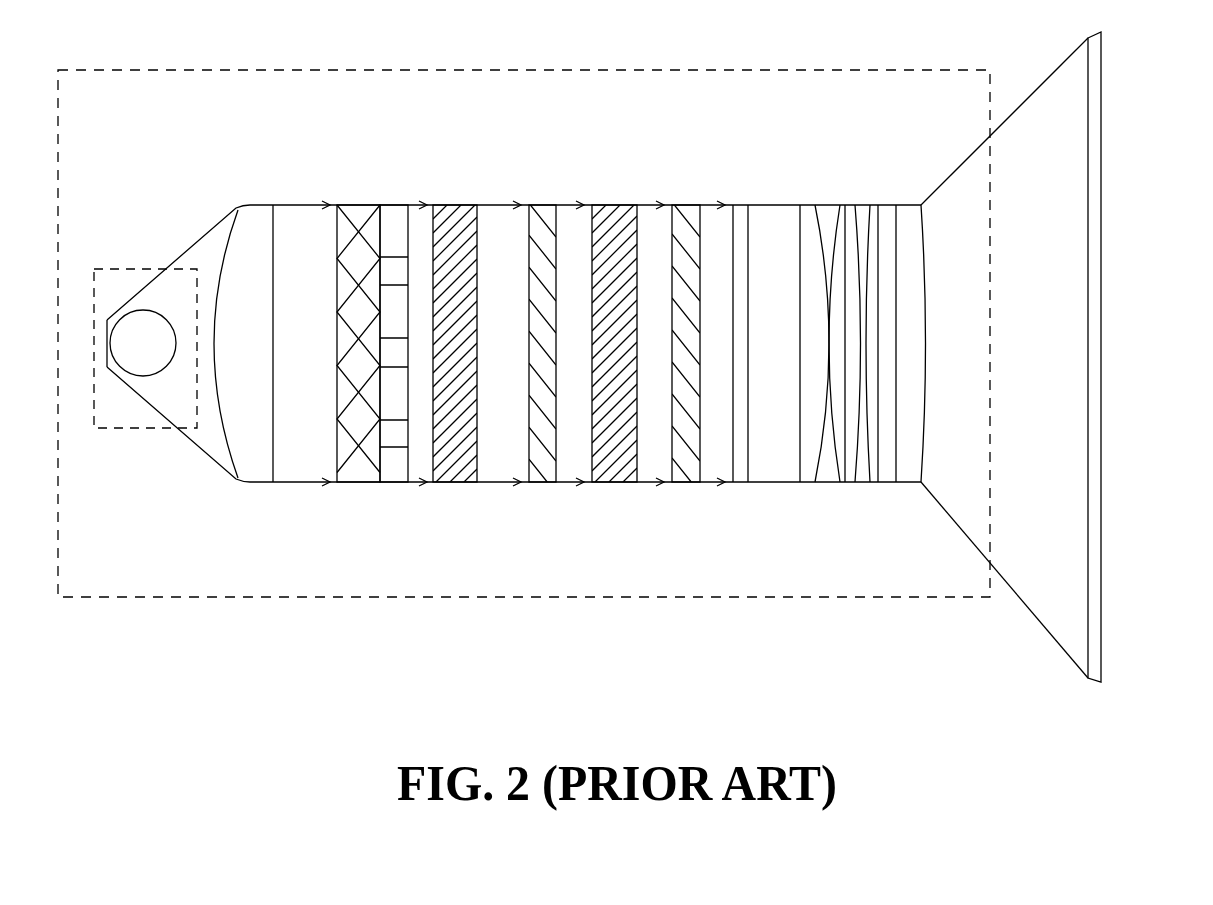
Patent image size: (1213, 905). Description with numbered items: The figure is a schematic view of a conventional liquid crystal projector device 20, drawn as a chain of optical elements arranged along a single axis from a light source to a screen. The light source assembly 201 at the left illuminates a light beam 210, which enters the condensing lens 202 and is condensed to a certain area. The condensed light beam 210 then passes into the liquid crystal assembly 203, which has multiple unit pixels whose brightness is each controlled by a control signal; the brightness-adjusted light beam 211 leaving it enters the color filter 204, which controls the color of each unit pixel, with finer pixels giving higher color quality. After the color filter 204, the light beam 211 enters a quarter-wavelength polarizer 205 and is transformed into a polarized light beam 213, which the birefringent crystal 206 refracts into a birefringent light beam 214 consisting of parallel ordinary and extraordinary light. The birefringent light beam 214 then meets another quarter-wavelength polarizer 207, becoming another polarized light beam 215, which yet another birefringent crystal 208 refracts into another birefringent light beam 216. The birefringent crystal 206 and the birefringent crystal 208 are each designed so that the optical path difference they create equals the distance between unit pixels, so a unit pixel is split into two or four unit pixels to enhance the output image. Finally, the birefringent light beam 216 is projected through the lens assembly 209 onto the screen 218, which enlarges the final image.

The liquid crystal projector device 20 is at (203, 597).
The light source assembly 201 is at (135, 268).
The condensing lens 202 is at (257, 483).
The liquid crystal assembly 203 is at (362, 205).
The color filter 204 is at (385, 485).
The ¼ wavelength polarizer 205 is at (458, 485).
The birefringent crystal 206 is at (537, 205).
The ¼ wavelength polarizer 207 is at (612, 485).
The birefringent crystal 208 is at (680, 485).
The lens assembly 209 is at (823, 205).
The light beam 210 is at (190, 245).
The light beam 211 is at (285, 205).
The polarized light beam 213 is at (487, 205).
The birefringent light beam 214 is at (568, 205).
The polarized light beam 215 is at (647, 205).
The birefringent light beam 216 is at (710, 205).
The screen 218 is at (1101, 262).